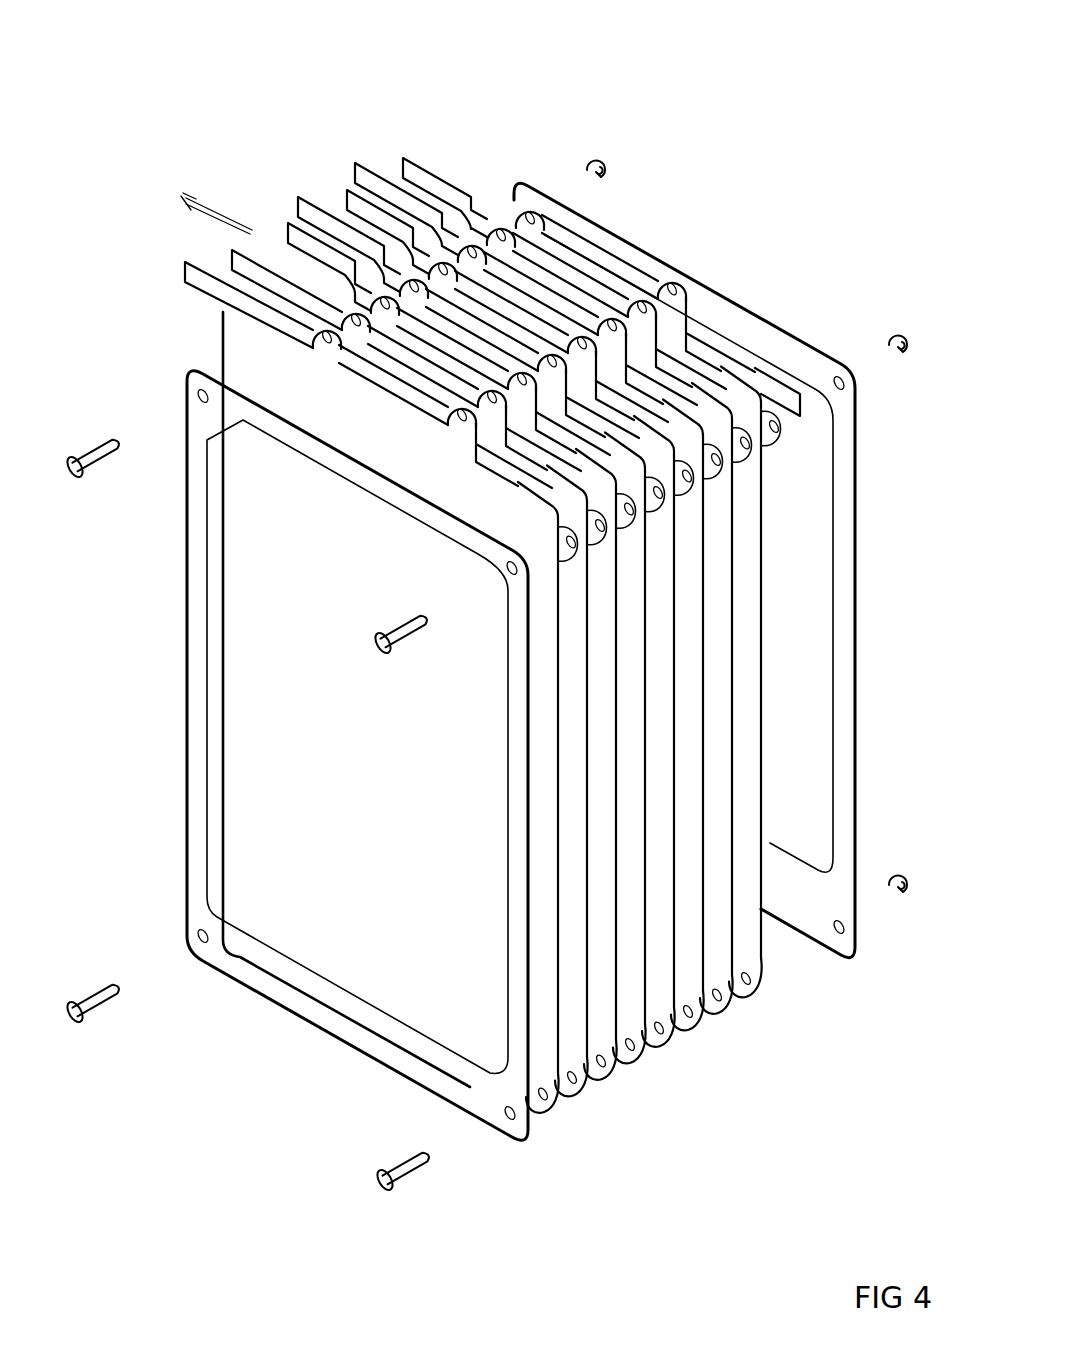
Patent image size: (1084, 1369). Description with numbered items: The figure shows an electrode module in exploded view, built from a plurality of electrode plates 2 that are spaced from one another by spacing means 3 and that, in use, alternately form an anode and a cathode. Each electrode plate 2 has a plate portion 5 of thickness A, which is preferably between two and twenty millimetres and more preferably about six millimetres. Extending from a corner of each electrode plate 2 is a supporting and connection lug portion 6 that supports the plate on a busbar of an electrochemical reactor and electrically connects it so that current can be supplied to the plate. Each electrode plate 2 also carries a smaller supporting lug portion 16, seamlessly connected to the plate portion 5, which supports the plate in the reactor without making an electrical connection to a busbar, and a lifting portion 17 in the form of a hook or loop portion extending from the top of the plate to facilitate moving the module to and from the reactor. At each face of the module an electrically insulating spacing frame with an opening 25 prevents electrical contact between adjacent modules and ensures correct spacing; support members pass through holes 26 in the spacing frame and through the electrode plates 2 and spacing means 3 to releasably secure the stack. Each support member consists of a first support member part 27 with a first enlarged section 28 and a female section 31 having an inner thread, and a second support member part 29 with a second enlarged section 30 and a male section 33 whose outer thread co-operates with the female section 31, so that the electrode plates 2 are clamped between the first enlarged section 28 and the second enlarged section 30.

The electrode plate 2 is at (170, 330).
The spacing means 3 is at (736, 456).
The plate portion 5 is at (745, 583).
The supporting and connection lug portion 6 is at (783, 383).
The supporting lug portion 16 is at (432, 158).
The lifting portion 17 is at (650, 273).
The opening 25 is at (260, 731).
The hole 26 is at (203, 930).
The first support member part 27 is at (90, 416).
The first enlarged section 28 is at (83, 482).
The second support member part 29 is at (601, 146).
The second enlarged section 30 is at (606, 172).
The female section 31 is at (113, 446).
The male section 33 is at (588, 168).
The thickness A is at (212, 195).